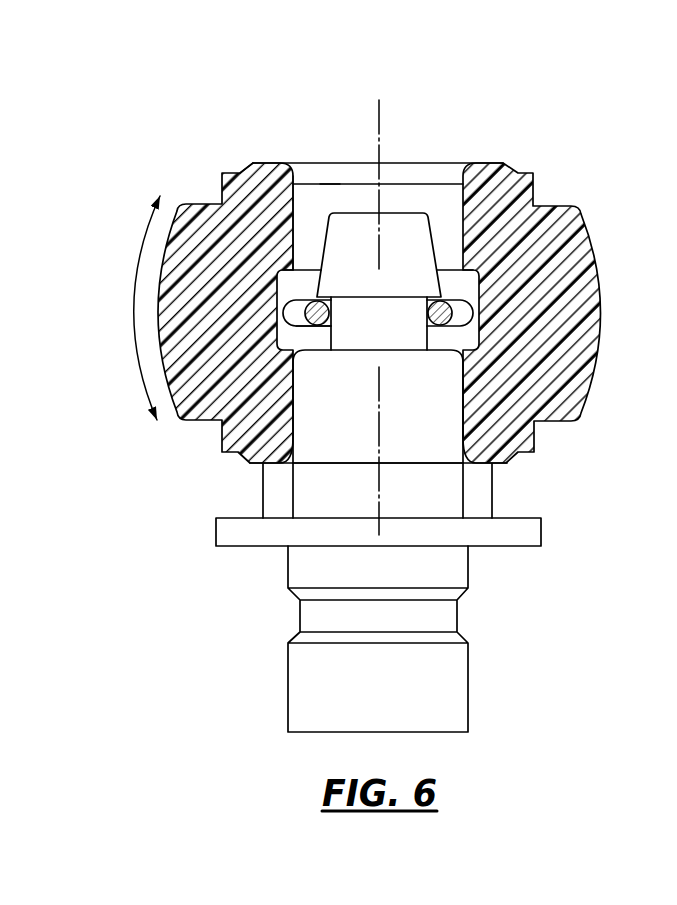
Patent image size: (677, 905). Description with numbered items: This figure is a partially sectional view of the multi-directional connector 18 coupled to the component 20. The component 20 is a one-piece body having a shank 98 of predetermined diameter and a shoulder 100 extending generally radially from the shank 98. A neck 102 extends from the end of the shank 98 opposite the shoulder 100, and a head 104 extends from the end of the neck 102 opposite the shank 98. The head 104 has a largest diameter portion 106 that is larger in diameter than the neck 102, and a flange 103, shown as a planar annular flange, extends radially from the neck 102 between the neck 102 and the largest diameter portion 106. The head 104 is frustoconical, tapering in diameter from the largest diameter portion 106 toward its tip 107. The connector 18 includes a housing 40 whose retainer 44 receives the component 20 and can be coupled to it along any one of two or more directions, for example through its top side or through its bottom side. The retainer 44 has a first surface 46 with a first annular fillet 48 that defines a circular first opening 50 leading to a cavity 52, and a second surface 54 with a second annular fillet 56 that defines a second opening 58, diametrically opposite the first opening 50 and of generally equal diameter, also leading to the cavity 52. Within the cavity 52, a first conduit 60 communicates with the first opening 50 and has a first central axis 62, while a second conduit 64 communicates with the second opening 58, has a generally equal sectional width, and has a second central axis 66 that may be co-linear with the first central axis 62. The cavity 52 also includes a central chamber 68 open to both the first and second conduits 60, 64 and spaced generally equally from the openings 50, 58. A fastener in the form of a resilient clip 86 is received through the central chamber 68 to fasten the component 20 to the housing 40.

The multi-directional connector 18 is at (203, 122).
The component 20 is at (238, 668).
The housing 40 is at (192, 199).
The retainer 44 is at (172, 238).
The first surface 46 is at (258, 163).
The first annular fillet 48 is at (297, 175).
The first opening 50 is at (296, 182).
The cavity 52 is at (287, 220).
The second surface 54 is at (263, 463).
The second annular fillet 56 is at (289, 464).
The second opening 58 is at (298, 444).
The first conduit 60 is at (328, 188).
The first central axis 62 is at (380, 146).
The second conduit 64 is at (462, 415).
The second central axis 66 is at (380, 497).
The central chamber 68 is at (282, 295).
The resilient clip 86 is at (302, 328).
The shank 98 is at (460, 378).
The shoulder 100 is at (485, 452).
The neck 102 is at (430, 340).
The flange 103 is at (314, 308).
The head 104 is at (413, 213).
The largest diameter portion 106 is at (279, 275).
The tip 107 is at (397, 213).